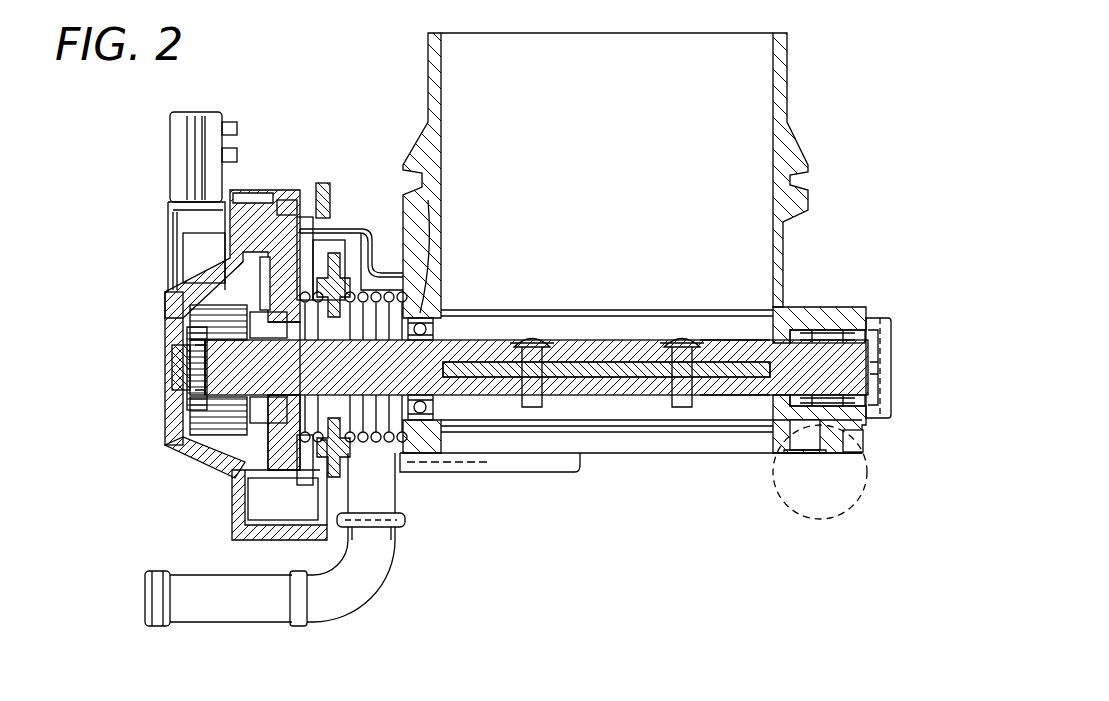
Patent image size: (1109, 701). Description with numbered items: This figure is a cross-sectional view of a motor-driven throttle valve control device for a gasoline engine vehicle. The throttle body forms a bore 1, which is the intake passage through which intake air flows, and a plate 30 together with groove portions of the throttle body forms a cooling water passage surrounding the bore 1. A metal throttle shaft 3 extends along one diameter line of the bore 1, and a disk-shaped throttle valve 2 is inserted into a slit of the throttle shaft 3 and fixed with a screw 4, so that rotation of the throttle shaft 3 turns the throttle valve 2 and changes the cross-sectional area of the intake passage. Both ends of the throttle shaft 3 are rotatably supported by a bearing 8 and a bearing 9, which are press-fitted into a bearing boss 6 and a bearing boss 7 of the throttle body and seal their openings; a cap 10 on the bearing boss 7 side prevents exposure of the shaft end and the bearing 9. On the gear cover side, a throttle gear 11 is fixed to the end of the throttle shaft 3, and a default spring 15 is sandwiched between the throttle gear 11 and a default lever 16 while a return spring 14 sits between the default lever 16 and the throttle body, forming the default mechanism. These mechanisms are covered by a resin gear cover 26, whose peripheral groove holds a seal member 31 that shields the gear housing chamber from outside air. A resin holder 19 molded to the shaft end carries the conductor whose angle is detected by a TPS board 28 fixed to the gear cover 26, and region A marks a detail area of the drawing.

The bore 1 is at (778, 300).
The throttle valve 2 is at (605, 380).
The throttle shaft 3 is at (745, 397).
The screw 4 is at (530, 407).
The bearing boss 6 is at (418, 318).
The bearing boss 7 is at (863, 432).
The bearing 8 is at (405, 185).
The bearing 9 is at (817, 330).
The cap 10 is at (890, 340).
The throttle gear 11 is at (278, 247).
The return spring 14 is at (405, 520).
The default spring 15 is at (303, 587).
The default lever 16 is at (335, 450).
The resin holder 19 is at (172, 452).
The gear cover 26 is at (172, 375).
The TPS board 28 is at (185, 305).
The plate 30 is at (800, 455).
The seal member 31 is at (297, 190).
The region A is at (872, 478).